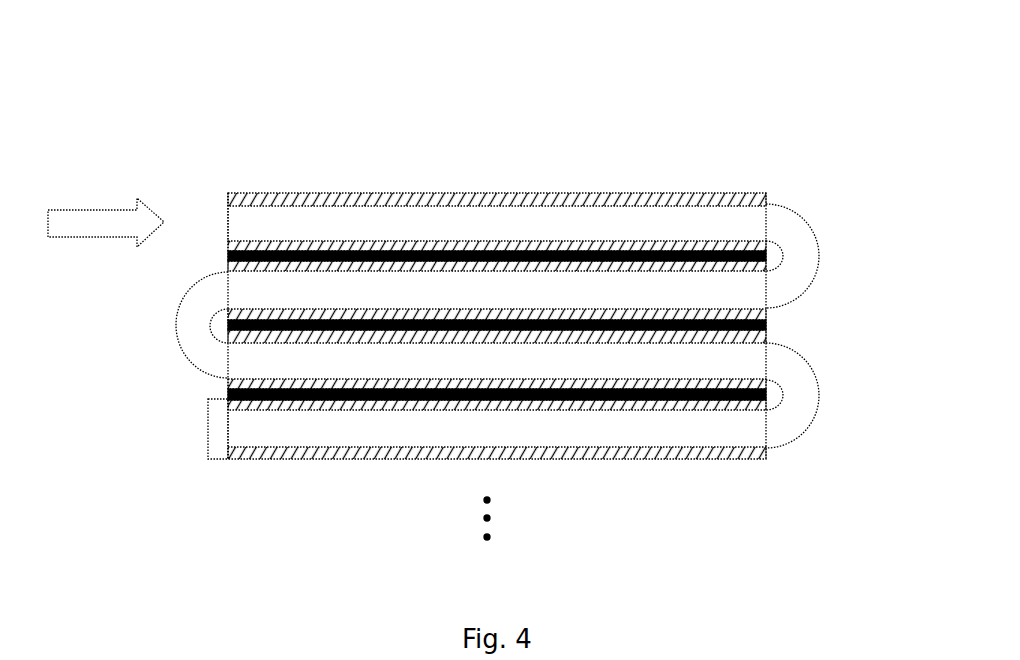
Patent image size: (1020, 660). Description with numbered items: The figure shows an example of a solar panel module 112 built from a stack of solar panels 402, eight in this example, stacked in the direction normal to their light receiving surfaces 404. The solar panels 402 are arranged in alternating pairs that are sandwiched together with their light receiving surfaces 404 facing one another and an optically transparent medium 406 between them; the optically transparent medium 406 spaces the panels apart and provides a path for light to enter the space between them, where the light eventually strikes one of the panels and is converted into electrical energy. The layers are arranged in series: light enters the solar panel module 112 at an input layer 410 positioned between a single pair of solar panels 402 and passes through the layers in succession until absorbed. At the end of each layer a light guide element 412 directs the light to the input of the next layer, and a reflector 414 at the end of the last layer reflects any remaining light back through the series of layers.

The solar panel module 112 is at (504, 276).
The solar panel 402 is at (585, 192).
The light receiving surface 404 is at (716, 241).
The optically transparent medium 406 is at (647, 435).
The input layer 410 is at (222, 224).
The light guide element 412 is at (192, 315).
The reflector 414 is at (208, 437).